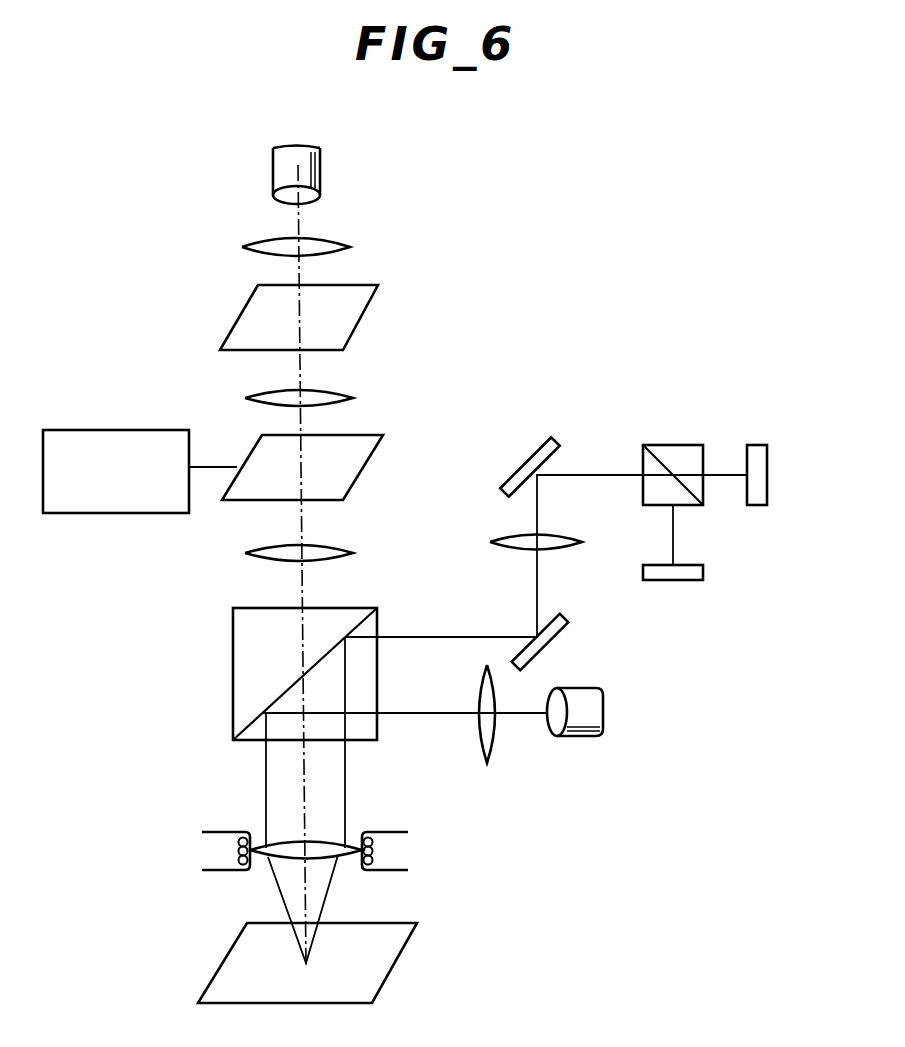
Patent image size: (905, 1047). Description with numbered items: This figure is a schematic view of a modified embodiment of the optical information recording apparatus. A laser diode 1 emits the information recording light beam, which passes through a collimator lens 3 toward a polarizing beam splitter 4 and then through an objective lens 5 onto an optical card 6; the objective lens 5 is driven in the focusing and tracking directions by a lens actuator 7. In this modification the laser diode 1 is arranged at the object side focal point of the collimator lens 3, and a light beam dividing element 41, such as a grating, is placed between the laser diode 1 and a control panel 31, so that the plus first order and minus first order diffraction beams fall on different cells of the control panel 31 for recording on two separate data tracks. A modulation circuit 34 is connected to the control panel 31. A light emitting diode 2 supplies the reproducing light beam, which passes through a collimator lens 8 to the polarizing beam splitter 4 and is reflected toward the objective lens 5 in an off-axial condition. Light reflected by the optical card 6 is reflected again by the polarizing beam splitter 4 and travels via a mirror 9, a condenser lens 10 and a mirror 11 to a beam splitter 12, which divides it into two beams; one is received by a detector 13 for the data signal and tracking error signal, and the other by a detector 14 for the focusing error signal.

The laser diode 1 is at (320, 156).
The light emitting diode 2 is at (590, 737).
The collimator lens 3 is at (350, 247).
The polarizing beam splitter 4 is at (233, 655).
The objective lens 5 is at (352, 845).
The optical card 6 is at (398, 958).
The lens actuator 7 is at (400, 832).
The collimator lens 8 is at (494, 745).
The mirror 9 is at (565, 625).
The condenser lens 10 is at (500, 540).
The mirror 11 is at (556, 440).
The beam splitter 12 is at (687, 445).
The detector 13 is at (703, 572).
The detector 14 is at (765, 445).
The control panel 31 is at (370, 456).
The modulation circuit 34 is at (151, 430).
The light beam dividing element 41 is at (372, 303).